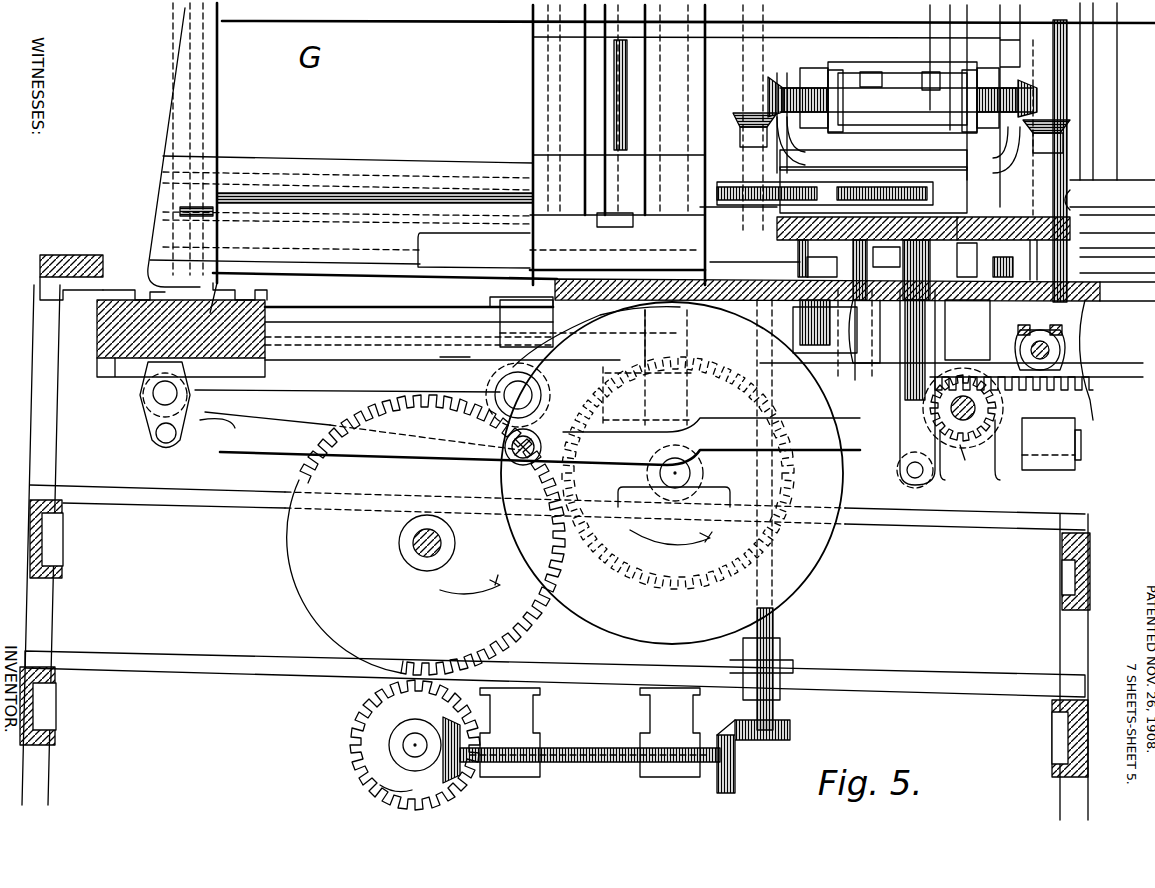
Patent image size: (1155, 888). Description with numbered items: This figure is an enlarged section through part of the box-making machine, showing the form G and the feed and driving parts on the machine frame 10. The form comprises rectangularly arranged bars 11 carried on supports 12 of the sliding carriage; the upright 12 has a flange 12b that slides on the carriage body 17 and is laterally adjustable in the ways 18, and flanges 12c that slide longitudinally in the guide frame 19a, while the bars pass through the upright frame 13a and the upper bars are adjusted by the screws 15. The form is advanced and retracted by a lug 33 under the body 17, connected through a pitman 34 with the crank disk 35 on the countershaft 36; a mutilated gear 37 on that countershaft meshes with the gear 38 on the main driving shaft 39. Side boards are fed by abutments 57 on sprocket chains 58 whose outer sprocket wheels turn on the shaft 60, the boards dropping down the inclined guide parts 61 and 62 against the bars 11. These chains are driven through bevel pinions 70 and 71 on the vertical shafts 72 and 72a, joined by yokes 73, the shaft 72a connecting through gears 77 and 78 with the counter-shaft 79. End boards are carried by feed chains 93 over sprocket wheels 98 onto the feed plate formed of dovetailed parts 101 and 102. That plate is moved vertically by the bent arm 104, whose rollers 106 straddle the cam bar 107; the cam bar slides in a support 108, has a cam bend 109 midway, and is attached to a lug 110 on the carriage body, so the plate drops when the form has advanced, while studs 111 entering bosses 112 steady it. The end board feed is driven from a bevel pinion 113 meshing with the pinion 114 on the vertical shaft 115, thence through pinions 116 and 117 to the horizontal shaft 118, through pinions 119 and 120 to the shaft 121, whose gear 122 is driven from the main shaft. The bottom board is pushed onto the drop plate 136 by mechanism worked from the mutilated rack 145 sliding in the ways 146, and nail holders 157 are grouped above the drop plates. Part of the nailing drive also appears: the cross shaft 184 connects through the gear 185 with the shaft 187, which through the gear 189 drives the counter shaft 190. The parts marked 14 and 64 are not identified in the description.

The frame 10 is at (457, 272).
The form bars 11 is at (462, 22).
The upright support 12 is at (212, 118).
The flange 12b is at (100, 340).
The flanges 12c is at (203, 183).
The upright frame 13a is at (540, 92).
The bracket 14 is at (666, 30).
The screws 15 is at (615, 95).
The carriage body 17 is at (220, 280).
The ways 18 is at (116, 270).
The guide frame 19a is at (348, 221).
The lug 33 is at (200, 403).
The pitman 34 is at (310, 415).
The crank disk 35 is at (772, 540).
The countershaft 36 is at (690, 473).
The mutilated gear 37 is at (653, 582).
The gear 38 is at (510, 617).
The main driving shaft 39 is at (399, 545).
The abutments 57 is at (867, 72).
The sprocket chains 58 is at (953, 103).
The shaft 60 is at (899, 108).
The inclined guide part 61 is at (953, 110).
The inclined guide lower part 62 is at (903, 157).
The rod 64 is at (1020, 48).
The bevel pinions 70 is at (767, 100).
The bevel pinions 71 is at (767, 87).
The vertical shaft 72 is at (750, 150).
The vertical shaft 72a is at (1083, 173).
The yokes 73 is at (1020, 153).
The gear 77 is at (1062, 340).
The gear 78 is at (1060, 357).
The counter-shaft 79 is at (1007, 383).
The feed chains 93 is at (860, 380).
The sprocket wheels 98 is at (850, 322).
The feed plate part 101 is at (953, 220).
The feed plate part 102 is at (1005, 222).
The bent arm 104 is at (870, 355).
The rollers 106 is at (900, 455).
The cam bar 107 is at (240, 455).
The support 108 is at (1057, 470).
The cam bend 109 is at (680, 432).
The lug 110 is at (145, 423).
The studs 111 is at (1013, 248).
The bosses 112 is at (800, 257).
The bevel pinion 113 is at (797, 247).
The pinion 114 is at (760, 268).
The vertical shaft 115 is at (773, 627).
The pinion 116 is at (790, 722).
The pinion 117 is at (735, 762).
The horizontal shaft 118 is at (598, 750).
The pinion 119 is at (485, 780).
The pinion 120 is at (390, 748).
The shaft 121 is at (365, 730).
The gear 122 is at (355, 783).
The drop plate 136 is at (1150, 235).
The mutilated rack 145 is at (267, 370).
The ways 146 is at (990, 352).
The nail holders 157 is at (1085, 195).
The cross shaft 184 is at (947, 413).
The gear 185 is at (997, 413).
The shaft 187 is at (747, 402).
The gear 189 is at (545, 360).
The counter shaft 190 is at (518, 395).